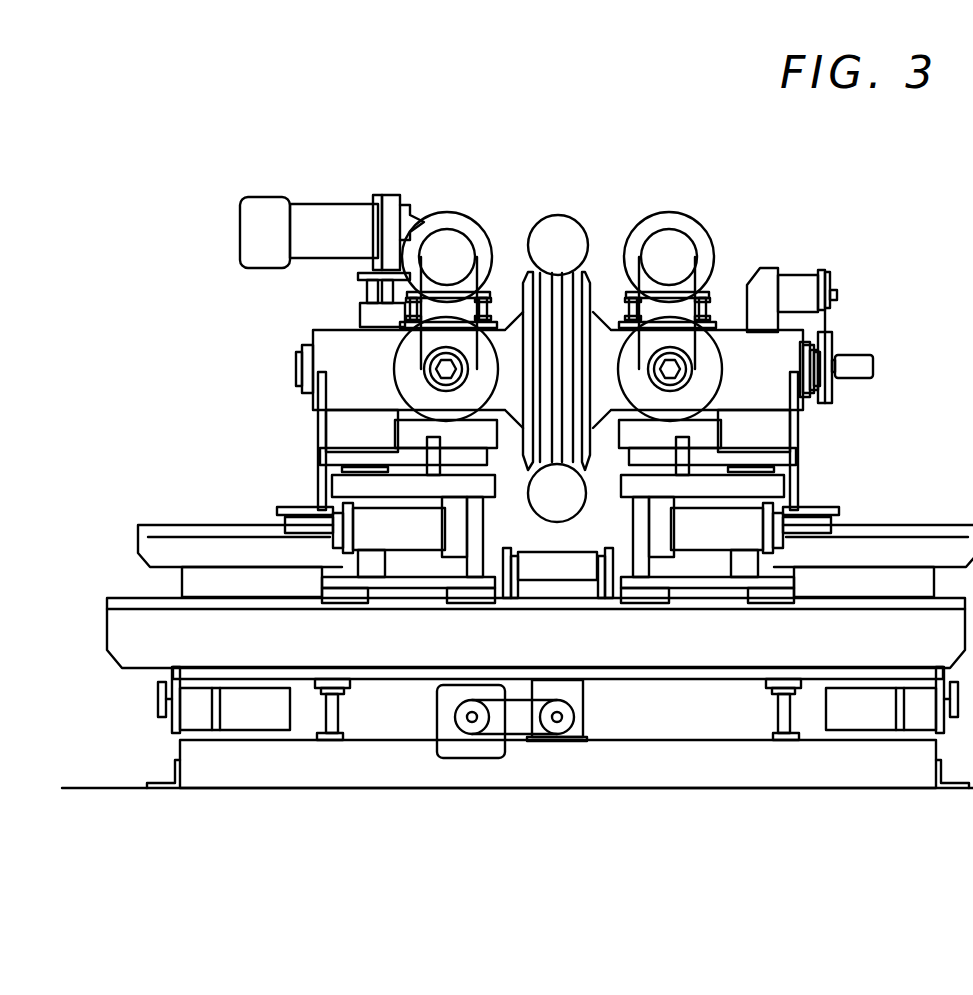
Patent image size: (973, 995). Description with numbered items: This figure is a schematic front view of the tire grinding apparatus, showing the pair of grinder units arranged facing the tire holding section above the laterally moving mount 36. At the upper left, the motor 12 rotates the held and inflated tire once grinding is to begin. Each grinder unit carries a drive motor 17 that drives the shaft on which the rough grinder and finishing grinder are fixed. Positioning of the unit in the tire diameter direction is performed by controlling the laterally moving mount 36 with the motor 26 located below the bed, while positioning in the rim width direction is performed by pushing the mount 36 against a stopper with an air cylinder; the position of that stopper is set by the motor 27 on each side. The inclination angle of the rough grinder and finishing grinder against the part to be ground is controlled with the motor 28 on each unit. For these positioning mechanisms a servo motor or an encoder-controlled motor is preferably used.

The motor 12 is at (333, 210).
The drive motor 17 is at (633, 230).
The motor 26 is at (463, 752).
The motor 27 is at (258, 717).
The motor 28 is at (385, 523).
The laterally moving mount 36 is at (405, 578).